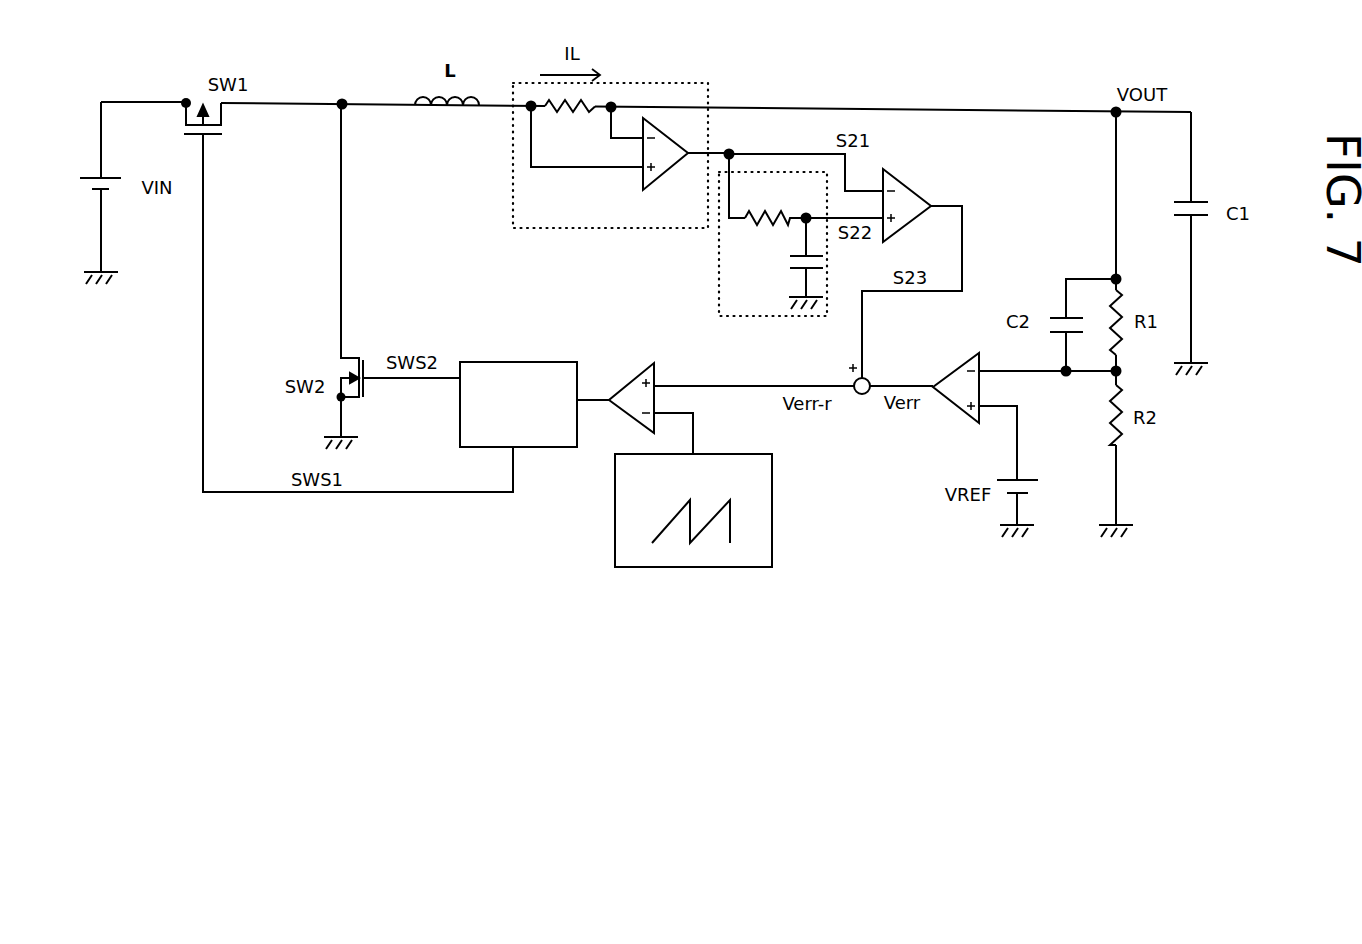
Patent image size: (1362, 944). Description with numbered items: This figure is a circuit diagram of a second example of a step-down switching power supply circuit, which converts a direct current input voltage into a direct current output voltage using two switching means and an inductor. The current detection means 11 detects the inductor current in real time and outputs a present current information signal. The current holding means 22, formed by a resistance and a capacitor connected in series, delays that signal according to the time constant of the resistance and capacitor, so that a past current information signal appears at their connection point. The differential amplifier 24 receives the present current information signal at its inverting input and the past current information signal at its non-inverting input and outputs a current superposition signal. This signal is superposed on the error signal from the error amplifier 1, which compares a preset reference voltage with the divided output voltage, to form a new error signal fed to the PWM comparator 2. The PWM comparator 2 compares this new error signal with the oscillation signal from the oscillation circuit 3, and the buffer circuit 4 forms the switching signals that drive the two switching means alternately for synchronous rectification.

The error amplifier 1 is at (967, 355).
The PWM comparator 2 is at (627, 402).
The oscillation circuit 3 is at (610, 550).
The buffer circuit 4 is at (455, 418).
The current detection means 11 is at (513, 180).
The current holding means 22 is at (778, 172).
The differential amplifier 24 is at (910, 200).